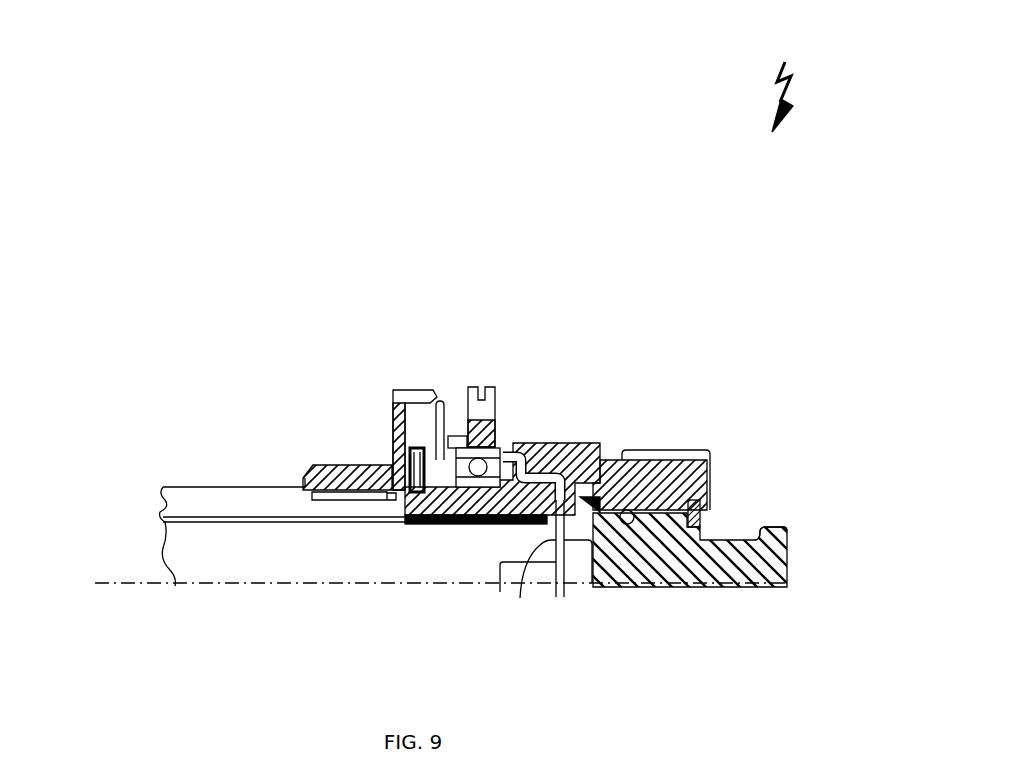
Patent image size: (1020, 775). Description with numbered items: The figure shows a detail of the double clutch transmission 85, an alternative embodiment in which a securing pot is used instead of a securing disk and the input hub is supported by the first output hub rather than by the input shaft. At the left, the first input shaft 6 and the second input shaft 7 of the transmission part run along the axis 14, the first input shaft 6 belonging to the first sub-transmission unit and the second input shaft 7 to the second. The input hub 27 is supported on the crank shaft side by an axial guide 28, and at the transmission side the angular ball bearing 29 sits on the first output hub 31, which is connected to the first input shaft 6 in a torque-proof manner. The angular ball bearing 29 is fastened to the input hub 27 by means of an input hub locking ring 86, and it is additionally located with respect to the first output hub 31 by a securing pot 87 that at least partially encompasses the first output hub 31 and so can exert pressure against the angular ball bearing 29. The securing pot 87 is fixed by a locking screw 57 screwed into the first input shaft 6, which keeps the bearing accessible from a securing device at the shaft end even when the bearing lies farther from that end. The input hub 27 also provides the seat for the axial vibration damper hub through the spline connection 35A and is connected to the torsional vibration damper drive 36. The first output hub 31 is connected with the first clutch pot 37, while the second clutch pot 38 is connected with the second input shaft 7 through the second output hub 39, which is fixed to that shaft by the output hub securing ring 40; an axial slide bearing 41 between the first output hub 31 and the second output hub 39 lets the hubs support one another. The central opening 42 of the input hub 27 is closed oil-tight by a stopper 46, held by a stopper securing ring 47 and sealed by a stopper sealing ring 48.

The first input shaft 6 is at (217, 563).
The second input shaft 7 is at (207, 503).
The axis of rotation 14 is at (97, 579).
The input hub 27 is at (585, 443).
The axial guide 28 is at (767, 525).
The angular ball bearing 29 is at (500, 450).
The first output hub 31 is at (410, 527).
The spline connection 35A is at (705, 450).
The torsional vibration damper drive 36 is at (484, 387).
The first clutch pot 37 is at (444, 402).
The second clutch pot 38 is at (430, 395).
The second output hub 39 is at (322, 490).
The output hub securing ring 40 is at (370, 500).
The axial slide bearing 41 is at (410, 452).
The central opening 42 is at (628, 512).
The stopper 46 is at (746, 586).
The stopper securing ring 47 is at (702, 503).
The stopper sealing ring 48 is at (600, 478).
The locking screw 57 is at (575, 587).
The double clutch transmission 85 is at (807, 72).
The input hub locking ring 86 is at (470, 448).
The securing pot 87 is at (527, 580).